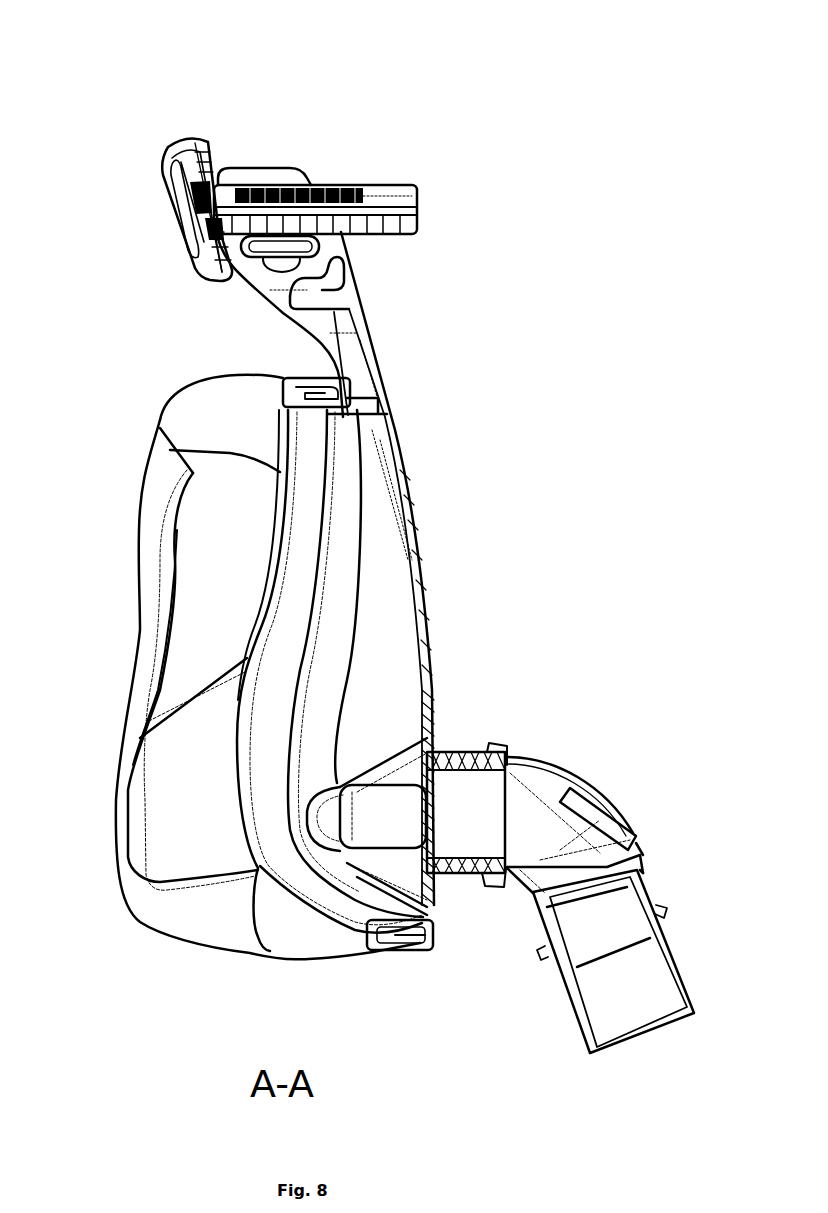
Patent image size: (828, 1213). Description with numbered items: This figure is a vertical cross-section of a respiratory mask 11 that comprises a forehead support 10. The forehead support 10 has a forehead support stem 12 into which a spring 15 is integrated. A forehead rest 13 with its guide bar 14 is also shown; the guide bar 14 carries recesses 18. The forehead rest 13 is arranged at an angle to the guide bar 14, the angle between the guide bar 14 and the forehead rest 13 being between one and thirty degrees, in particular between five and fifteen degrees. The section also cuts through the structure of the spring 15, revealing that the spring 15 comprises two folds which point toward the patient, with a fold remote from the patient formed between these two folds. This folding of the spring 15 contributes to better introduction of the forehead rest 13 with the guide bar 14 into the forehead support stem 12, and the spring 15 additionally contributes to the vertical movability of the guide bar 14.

The forehead support 10 is at (227, 140).
The respiratory mask 11 is at (468, 641).
The forehead support stem 12 is at (363, 295).
The forehead rest 13 is at (162, 160).
The guide bar 14 is at (407, 183).
The spring 15 is at (347, 258).
The recesses 18 is at (337, 187).